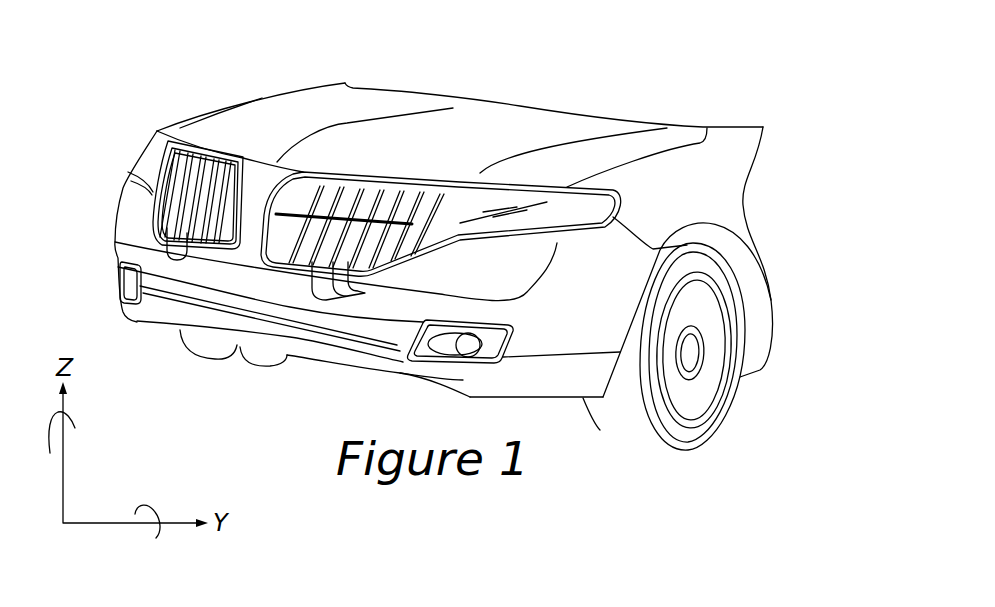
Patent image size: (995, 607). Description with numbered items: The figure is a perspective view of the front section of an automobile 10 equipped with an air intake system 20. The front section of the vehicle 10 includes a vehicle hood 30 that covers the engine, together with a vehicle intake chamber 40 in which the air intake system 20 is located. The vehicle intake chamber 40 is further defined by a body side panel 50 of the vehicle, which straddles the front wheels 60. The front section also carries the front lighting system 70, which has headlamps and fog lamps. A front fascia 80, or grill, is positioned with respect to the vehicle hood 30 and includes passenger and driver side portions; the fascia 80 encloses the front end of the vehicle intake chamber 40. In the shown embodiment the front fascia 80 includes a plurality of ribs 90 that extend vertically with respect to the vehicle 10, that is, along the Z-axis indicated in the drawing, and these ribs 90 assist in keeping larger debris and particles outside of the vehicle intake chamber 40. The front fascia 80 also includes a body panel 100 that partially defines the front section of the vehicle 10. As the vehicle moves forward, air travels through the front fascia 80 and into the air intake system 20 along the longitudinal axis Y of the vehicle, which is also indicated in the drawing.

The automobile 10 is at (797, 83).
The air intake system 20 is at (578, 70).
The vehicle hood 30 is at (302, 107).
The vehicle intake chamber 40 is at (308, 394).
The body side panel 50 is at (737, 130).
The front wheels 60 is at (217, 355).
The front lighting system 70 is at (150, 155).
The front fascia 80 is at (205, 162).
The ribs 90 is at (365, 293).
The body panel 100 is at (557, 387).